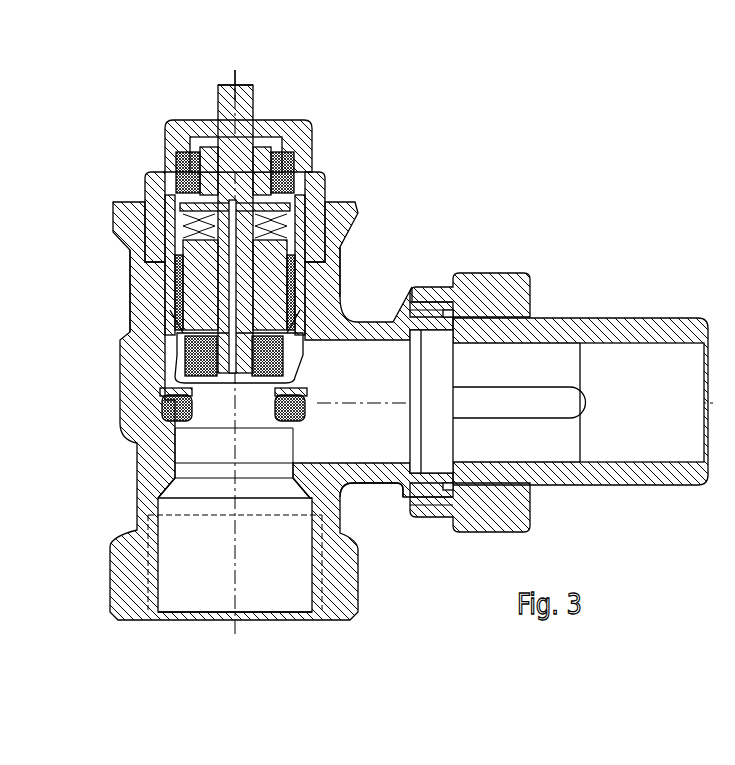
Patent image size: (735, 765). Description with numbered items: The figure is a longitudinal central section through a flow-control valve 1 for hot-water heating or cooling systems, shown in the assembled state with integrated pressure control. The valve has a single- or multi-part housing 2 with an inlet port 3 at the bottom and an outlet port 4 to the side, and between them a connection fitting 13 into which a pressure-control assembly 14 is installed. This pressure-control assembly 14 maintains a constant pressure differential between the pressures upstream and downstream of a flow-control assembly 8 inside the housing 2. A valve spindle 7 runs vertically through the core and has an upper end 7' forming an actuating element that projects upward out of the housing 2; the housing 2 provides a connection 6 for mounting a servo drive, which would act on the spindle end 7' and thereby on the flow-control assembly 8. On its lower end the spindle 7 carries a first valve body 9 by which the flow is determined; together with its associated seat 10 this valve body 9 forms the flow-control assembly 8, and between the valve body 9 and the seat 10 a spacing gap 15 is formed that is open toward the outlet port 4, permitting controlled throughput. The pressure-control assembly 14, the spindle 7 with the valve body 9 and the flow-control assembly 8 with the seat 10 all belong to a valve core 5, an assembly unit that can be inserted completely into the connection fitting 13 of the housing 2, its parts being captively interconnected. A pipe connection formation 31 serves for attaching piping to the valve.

The flow-control valve 1 is at (428, 150).
The housing 2 is at (365, 327).
The inlet port 3 is at (347, 572).
The outlet port 4 is at (423, 338).
The valve core 5 is at (330, 167).
The connection for servo drive 6 is at (352, 210).
The valve spindle 7 is at (208, 213).
The spindle end 7' is at (256, 73).
The flow-control assembly 8 is at (162, 432).
The first valve body 9 is at (345, 487).
The seat 10 is at (187, 352).
The connection fitting 13 is at (338, 278).
The pressure-control assembly 14 is at (128, 286).
The gap 15 is at (175, 380).
The pipe connection formation 31 is at (160, 488).